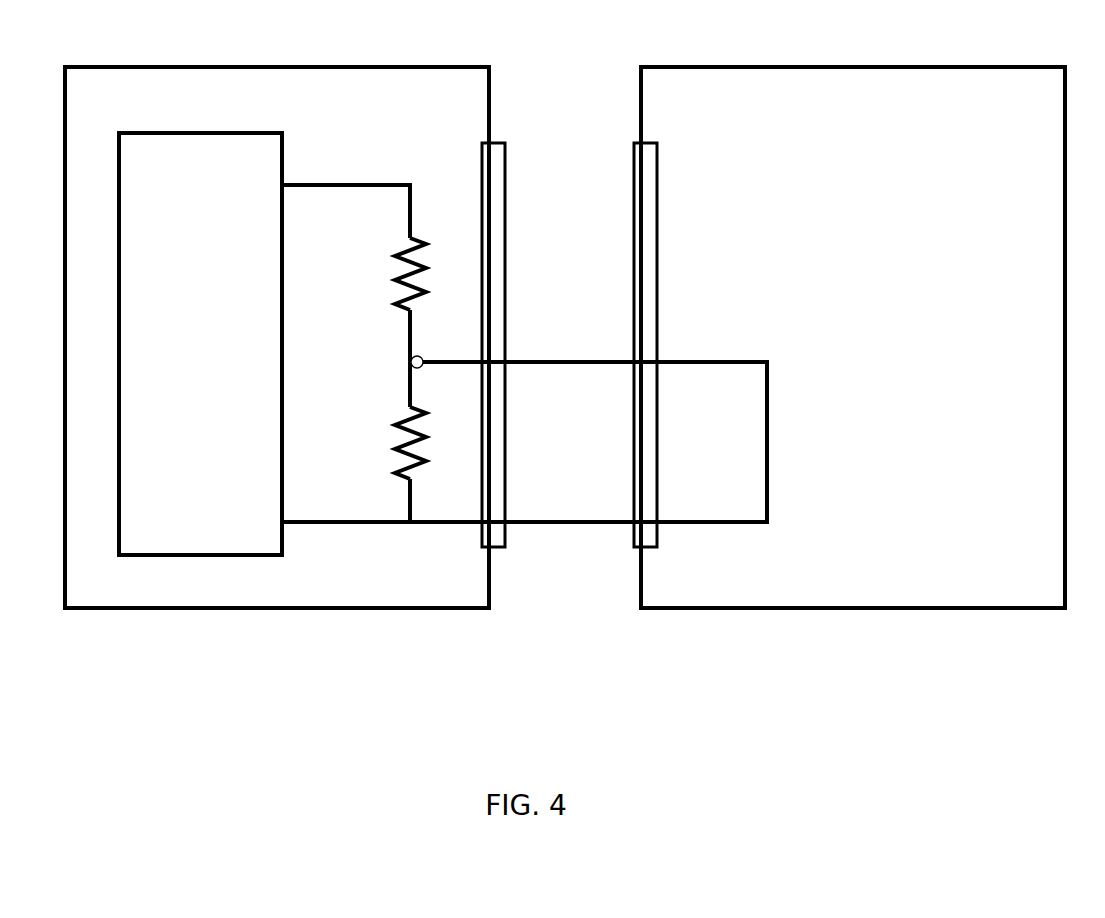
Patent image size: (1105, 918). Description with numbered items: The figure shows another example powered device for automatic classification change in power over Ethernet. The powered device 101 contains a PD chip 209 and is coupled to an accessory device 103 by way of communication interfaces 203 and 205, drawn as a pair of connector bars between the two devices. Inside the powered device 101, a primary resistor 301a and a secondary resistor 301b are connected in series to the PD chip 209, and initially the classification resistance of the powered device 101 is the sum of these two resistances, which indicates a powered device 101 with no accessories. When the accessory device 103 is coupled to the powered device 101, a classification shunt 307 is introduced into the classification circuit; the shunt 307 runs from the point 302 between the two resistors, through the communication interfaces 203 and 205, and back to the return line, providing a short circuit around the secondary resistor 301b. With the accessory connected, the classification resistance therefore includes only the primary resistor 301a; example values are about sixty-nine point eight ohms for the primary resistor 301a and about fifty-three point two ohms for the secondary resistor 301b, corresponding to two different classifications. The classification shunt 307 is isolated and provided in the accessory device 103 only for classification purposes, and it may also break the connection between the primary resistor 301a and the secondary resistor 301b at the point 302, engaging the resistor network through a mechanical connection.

The powered device 101 is at (167, 67).
The accessory device 103 is at (737, 67).
The communication interface 203 is at (507, 157).
The communication interface 205 is at (660, 155).
The PD chip 209 is at (200, 344).
The primary resistor 301a is at (397, 255).
The secondary resistor 301b is at (397, 422).
The point 302 is at (418, 355).
The classification shunt 307 is at (770, 376).